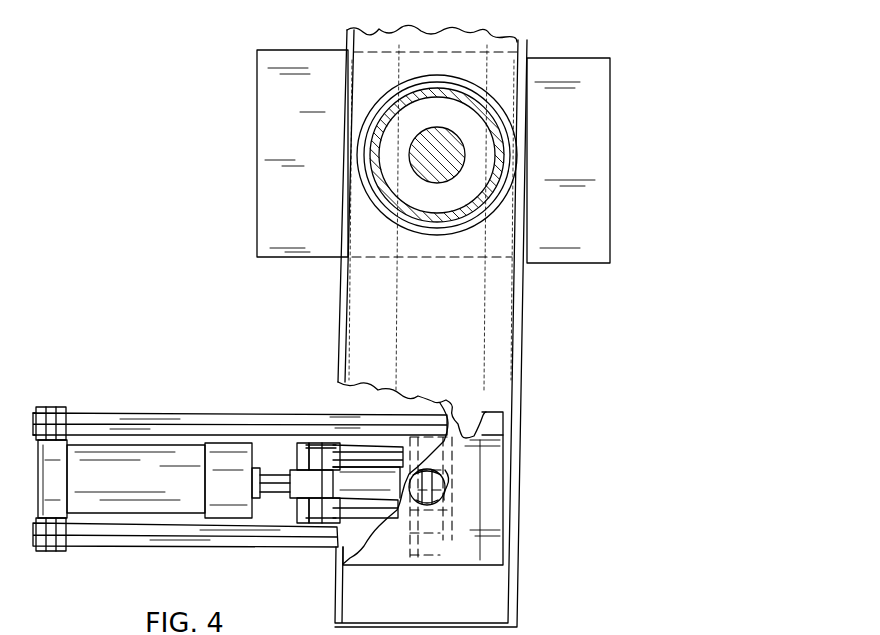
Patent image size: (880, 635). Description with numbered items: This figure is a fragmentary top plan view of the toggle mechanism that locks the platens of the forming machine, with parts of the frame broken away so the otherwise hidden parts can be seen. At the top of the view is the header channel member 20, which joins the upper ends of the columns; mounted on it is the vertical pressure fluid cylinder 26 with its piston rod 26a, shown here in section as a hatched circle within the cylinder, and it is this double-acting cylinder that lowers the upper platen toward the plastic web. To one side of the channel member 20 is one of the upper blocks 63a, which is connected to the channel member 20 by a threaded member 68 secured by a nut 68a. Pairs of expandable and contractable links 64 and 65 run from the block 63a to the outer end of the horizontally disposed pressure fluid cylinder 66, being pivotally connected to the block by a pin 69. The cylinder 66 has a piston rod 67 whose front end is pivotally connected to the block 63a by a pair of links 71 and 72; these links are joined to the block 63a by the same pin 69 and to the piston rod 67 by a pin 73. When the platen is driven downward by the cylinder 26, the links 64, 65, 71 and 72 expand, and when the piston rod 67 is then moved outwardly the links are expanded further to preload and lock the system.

The header channel member 20 is at (503, 350).
The pressure fluid cylinder 26 is at (423, 90).
The piston rod 26a is at (449, 111).
The upper block 63a is at (388, 402).
The link 64 is at (203, 394).
The link 65 is at (123, 430).
The pressure fluid cylinder 66 is at (235, 458).
The piston rod 67 is at (275, 475).
The threaded member 68 is at (440, 480).
The nut 68a is at (442, 484).
The pin 69 is at (455, 402).
The link 71 is at (355, 452).
The link 72 is at (337, 460).
The pin 73 is at (318, 465).